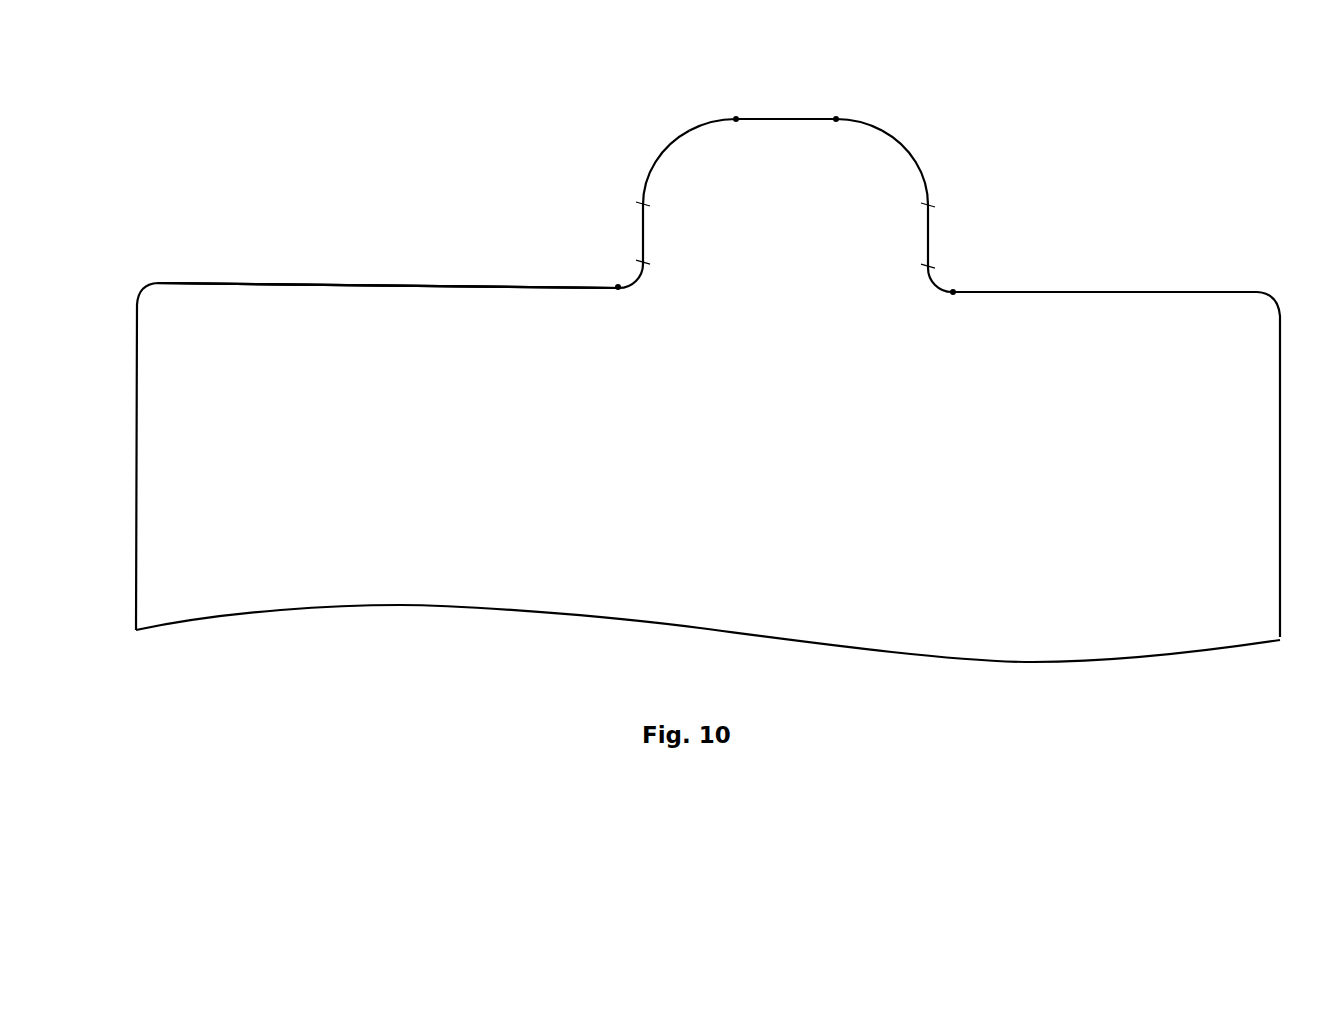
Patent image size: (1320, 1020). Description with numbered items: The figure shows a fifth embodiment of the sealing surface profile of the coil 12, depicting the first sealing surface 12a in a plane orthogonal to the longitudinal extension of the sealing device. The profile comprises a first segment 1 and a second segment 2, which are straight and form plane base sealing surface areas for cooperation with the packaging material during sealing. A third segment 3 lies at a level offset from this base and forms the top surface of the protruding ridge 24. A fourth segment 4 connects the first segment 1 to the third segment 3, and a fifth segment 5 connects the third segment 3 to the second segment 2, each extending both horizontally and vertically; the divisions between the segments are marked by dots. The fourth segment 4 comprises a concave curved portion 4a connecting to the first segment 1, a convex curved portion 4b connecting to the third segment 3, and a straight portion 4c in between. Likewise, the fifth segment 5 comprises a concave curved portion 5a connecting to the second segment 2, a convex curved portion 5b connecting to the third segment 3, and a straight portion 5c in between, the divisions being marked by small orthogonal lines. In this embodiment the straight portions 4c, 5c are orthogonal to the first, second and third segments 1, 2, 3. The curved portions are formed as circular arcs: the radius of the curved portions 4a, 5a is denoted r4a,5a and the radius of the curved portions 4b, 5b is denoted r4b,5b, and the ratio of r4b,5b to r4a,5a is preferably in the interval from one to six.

The first segment 1 is at (262, 283).
The second segment 2 is at (1153, 292).
The third segment 3 is at (803, 118).
The fourth segment 4 is at (656, 163).
The curved portion 4a is at (583, 256).
The curved portion 4b is at (703, 123).
The straight portion 4c is at (643, 232).
The fifth segment 5 is at (928, 187).
The curved portion 5a is at (955, 289).
The curved portion 5b is at (867, 123).
The straight portion 5c is at (930, 237).
The coil 12 is at (368, 287).
The first sealing surface 12a is at (388, 285).
The protruding ridge 24 is at (946, 127).
The radius of the curved portions connecting to the first and second segments r4a,5a is at (630, 277).
The radius of the curved portions connecting to the third segment r4b,5b is at (728, 149).